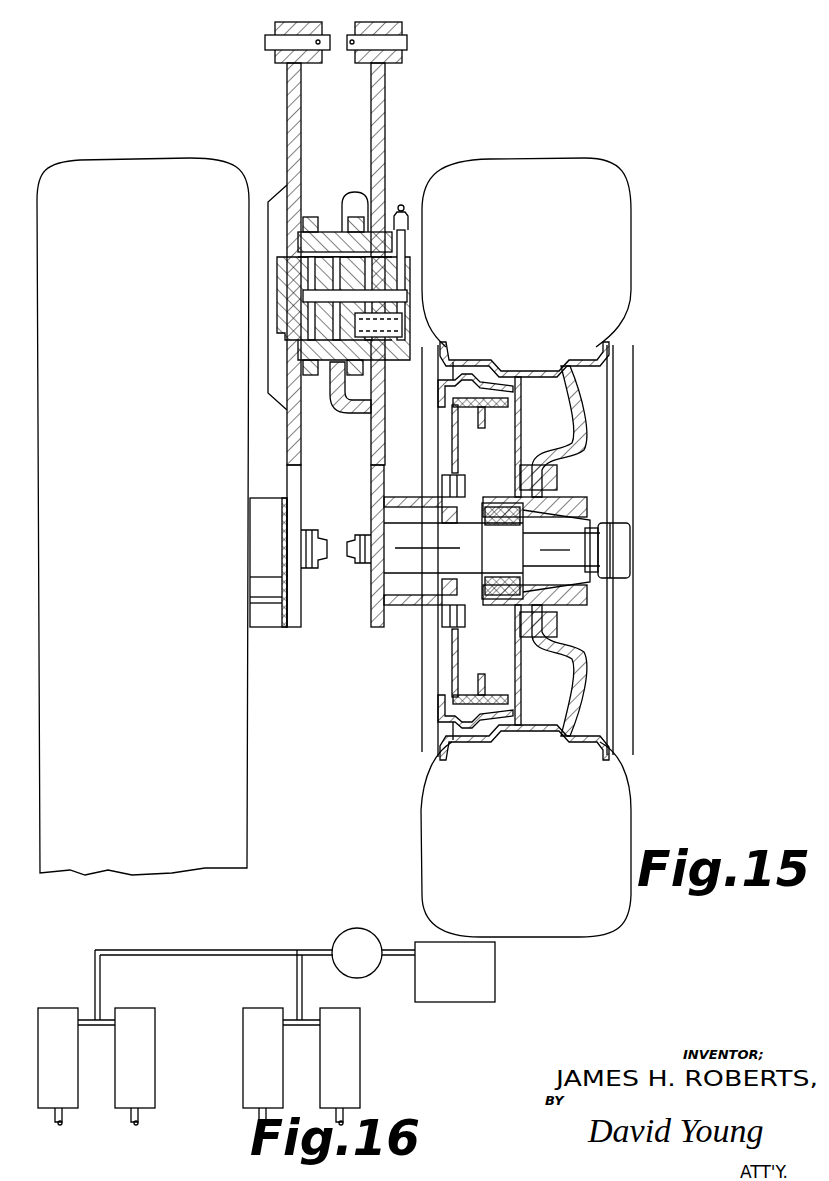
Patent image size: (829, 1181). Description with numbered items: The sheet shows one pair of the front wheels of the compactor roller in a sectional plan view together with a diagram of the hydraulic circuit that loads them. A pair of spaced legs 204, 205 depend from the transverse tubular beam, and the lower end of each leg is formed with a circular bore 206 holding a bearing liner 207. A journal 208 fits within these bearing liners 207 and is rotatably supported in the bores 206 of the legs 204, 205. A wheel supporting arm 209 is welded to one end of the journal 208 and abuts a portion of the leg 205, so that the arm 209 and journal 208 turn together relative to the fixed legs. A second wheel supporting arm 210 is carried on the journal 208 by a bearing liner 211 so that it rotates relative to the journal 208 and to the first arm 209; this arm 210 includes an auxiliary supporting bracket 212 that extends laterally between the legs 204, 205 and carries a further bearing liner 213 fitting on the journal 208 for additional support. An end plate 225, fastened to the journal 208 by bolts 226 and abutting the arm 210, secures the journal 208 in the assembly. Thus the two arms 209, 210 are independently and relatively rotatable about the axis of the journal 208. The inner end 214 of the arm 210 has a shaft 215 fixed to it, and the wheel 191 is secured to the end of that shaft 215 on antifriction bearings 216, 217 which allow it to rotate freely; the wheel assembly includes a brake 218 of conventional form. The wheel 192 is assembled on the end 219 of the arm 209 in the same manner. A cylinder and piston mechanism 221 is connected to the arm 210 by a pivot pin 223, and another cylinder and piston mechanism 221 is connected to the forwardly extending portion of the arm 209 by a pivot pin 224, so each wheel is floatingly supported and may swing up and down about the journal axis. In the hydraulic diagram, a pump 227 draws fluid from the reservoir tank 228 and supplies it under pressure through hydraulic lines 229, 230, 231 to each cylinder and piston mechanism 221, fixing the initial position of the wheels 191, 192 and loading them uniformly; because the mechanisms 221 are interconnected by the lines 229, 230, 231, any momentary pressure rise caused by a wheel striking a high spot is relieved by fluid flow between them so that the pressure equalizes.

In FIG. 15, the front wheel 191 is at (630, 163).
In FIG. 15, the front wheel 192 is at (115, 175).
In FIG. 15, the leg 204 is at (370, 208).
In FIG. 15, the leg 205 is at (313, 217).
In FIG. 15, the circular bore 206 is at (321, 226).
In FIG. 15, the bearing liner 207 is at (295, 250).
In FIG. 15, the journal 208 is at (408, 253).
In FIG. 15, the wheel supporting arm 209 is at (292, 95).
In FIG. 15, the second wheel supporting arm 210 is at (382, 95).
In FIG. 15, the bearing liner 211 is at (408, 347).
In FIG. 15, the auxiliary supporting bracket 212 is at (386, 174).
In FIG. 15, the bearing liner 213 is at (338, 399).
In FIG. 15, the inner end 214 is at (377, 623).
In FIG. 15, the shaft 215 is at (418, 558).
In FIG. 15, the antifriction bearing 216 is at (580, 512).
In FIG. 15, the antifriction bearing 217 is at (632, 527).
In FIG. 15, the brake 218 is at (468, 679).
In FIG. 15, the end 219 is at (292, 623).
In FIG. 16, the cylinder and piston mechanism 221 is at (52, 1012).
In FIG. 15, the pivot pin 223 is at (385, 42).
In FIG. 15, the pivot pin 224 is at (283, 40).
In FIG. 15, the end plate 225 is at (405, 268).
In FIG. 15, the bolt 226 is at (405, 317).
In FIG. 16, the pump 227 is at (352, 928).
In FIG. 16, the reservoir tank 228 is at (463, 992).
In FIG. 16, the hydraulic line 229 is at (210, 950).
In FIG. 16, the hydraulic line 230 is at (95, 968).
In FIG. 16, the hydraulic line 231 is at (297, 985).